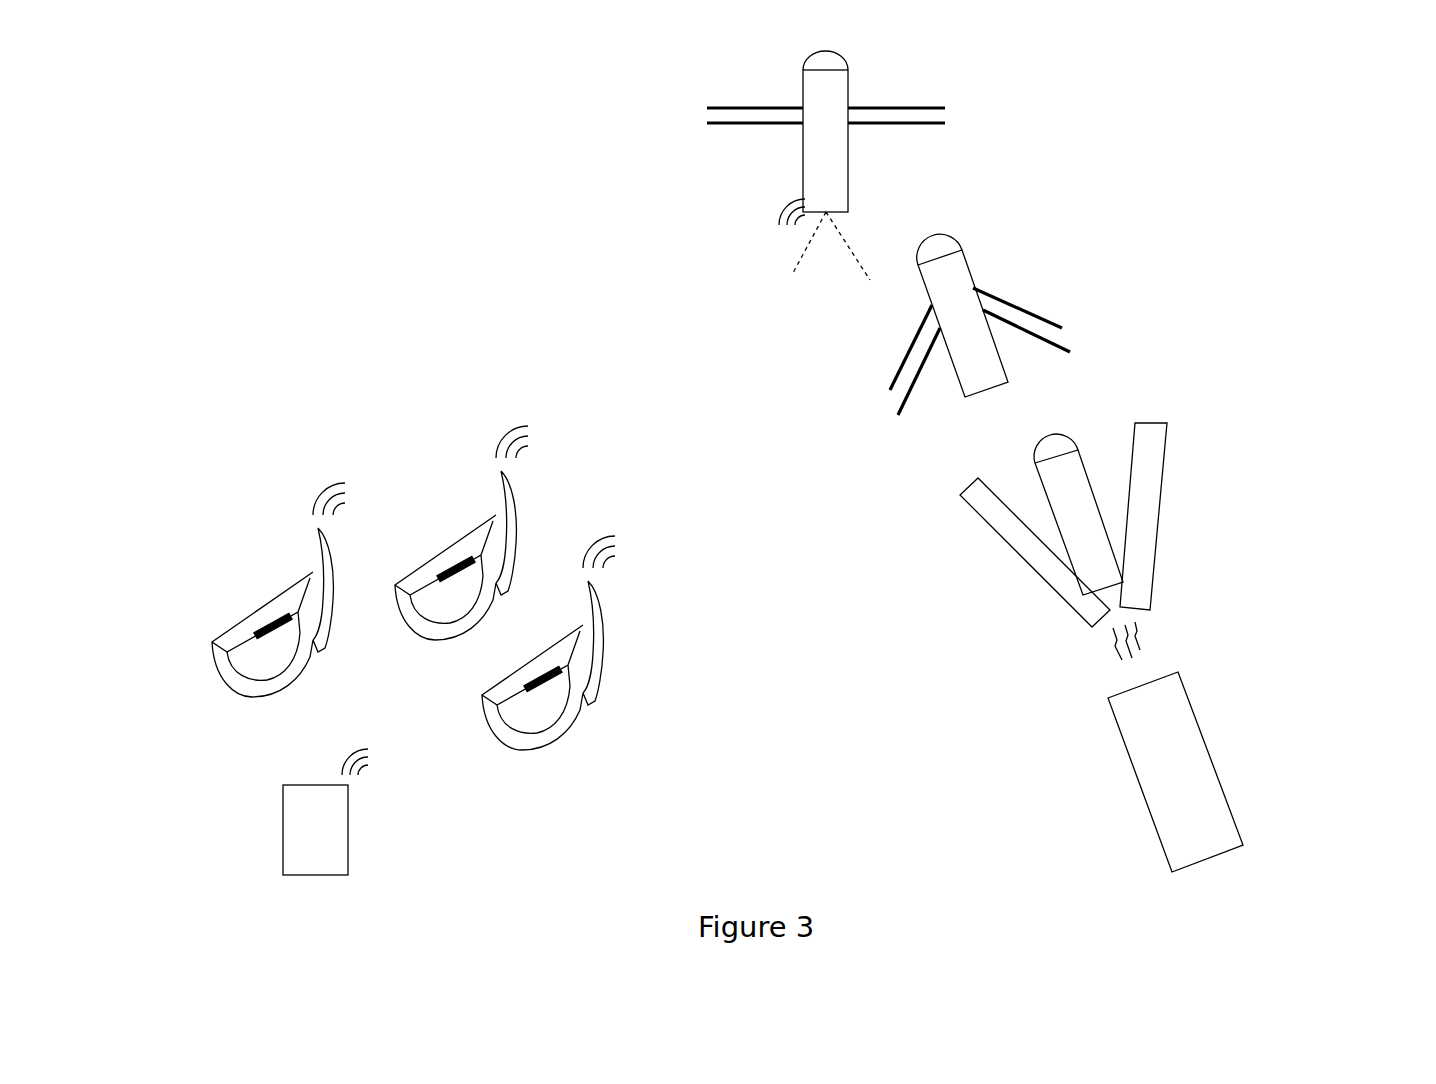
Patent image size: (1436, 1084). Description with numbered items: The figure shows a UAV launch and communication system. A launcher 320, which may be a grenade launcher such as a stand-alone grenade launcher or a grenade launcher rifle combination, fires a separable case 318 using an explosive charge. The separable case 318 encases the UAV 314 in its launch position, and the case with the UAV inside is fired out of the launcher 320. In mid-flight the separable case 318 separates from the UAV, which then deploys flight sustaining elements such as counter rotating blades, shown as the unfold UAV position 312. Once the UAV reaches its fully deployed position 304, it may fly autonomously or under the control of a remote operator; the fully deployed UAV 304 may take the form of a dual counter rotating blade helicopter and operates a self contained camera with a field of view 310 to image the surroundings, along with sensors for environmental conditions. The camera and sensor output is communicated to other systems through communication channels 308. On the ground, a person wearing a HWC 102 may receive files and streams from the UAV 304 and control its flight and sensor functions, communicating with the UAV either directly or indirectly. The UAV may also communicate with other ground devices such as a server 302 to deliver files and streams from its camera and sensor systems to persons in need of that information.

The HWC 102 is at (388, 453).
The server 302 is at (368, 820).
The fully deployed UAV 304 is at (755, 83).
The communication channel 308 is at (762, 215).
The field of view 310 is at (800, 268).
The unfold UAV position 312 is at (1020, 240).
The UAV 314 is at (1100, 448).
The separable case 318 is at (1170, 522).
The launcher 320 is at (1103, 748).